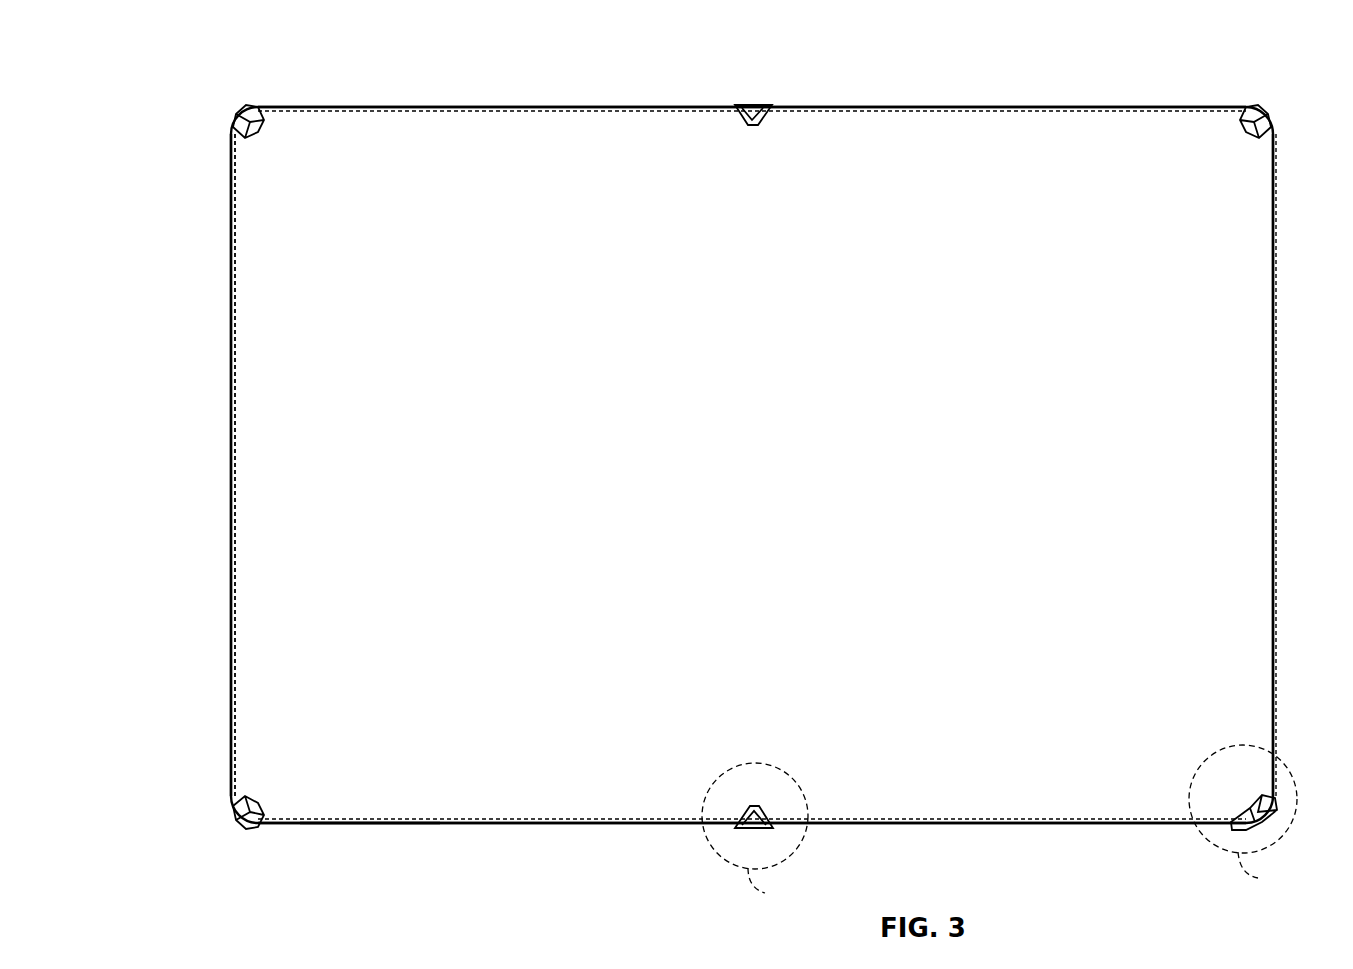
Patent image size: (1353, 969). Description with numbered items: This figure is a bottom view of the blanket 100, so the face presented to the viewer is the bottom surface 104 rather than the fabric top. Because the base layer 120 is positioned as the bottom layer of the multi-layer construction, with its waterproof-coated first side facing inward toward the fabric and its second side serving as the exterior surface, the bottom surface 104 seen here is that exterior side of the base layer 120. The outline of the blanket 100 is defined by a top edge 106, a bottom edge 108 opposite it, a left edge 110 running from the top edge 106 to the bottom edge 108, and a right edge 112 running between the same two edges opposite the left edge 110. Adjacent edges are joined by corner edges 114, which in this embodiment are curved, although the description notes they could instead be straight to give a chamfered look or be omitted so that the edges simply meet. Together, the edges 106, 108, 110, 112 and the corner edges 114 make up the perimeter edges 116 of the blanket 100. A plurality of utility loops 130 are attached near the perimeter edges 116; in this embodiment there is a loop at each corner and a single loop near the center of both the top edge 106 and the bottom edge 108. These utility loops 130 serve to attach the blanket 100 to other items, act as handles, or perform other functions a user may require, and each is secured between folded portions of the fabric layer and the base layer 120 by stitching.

The blanket 100 is at (165, 44).
The bottom surface 104 is at (707, 297).
The top edge 106 is at (1098, 107).
The bottom edge 108 is at (496, 824).
The left edge 110 is at (1273, 288).
The right edge 112 is at (231, 443).
The corner edges 114 is at (240, 813).
The perimeter edges 116 is at (366, 824).
The base layer 120 is at (457, 451).
The utility loops 130 is at (735, 822).